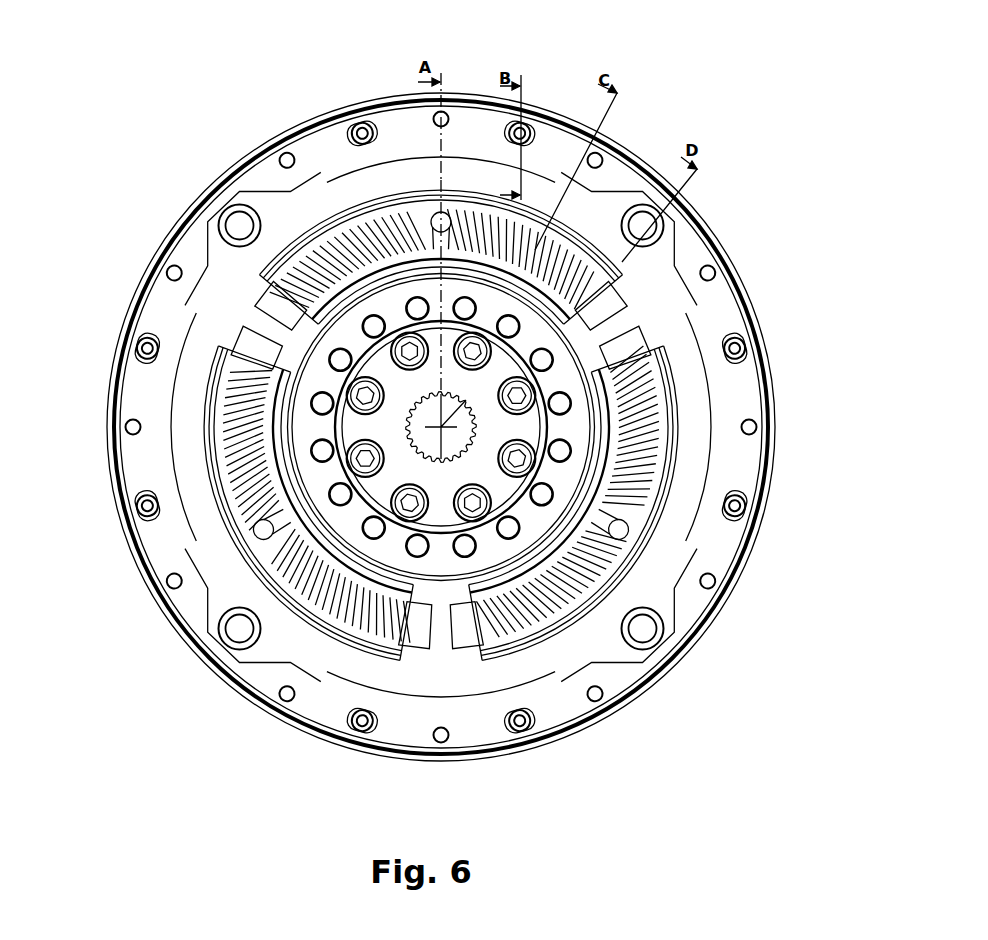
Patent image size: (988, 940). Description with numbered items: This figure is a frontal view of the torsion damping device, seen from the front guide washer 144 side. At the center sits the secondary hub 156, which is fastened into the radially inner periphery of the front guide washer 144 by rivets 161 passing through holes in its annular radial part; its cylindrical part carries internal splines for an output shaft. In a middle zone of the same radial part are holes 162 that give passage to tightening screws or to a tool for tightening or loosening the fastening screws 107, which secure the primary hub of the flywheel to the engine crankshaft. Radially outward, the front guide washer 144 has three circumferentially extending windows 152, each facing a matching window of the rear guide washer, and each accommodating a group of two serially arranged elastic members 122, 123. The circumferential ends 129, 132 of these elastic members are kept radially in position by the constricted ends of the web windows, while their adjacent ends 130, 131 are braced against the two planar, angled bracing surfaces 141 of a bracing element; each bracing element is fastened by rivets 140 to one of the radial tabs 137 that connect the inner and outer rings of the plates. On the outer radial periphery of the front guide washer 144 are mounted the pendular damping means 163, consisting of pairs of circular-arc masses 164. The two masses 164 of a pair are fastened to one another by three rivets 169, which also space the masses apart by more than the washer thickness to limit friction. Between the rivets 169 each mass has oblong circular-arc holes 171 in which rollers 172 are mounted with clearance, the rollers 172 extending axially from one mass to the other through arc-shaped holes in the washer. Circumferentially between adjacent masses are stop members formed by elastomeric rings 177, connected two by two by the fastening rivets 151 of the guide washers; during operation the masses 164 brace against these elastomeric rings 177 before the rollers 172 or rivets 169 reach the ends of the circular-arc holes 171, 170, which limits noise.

The fastening screws 107 is at (352, 340).
The elastic member 122 is at (357, 610).
The elastic member 123 is at (250, 478).
The end of elastic member 129 is at (387, 610).
The end of elastic member 130 is at (285, 540).
The end of elastic member 131 is at (265, 525).
The end of elastic member 132 is at (217, 350).
The radial tab 137 is at (630, 525).
The rivet 140 is at (602, 552).
The bracing surface 141 is at (390, 222).
The front guide washer 144 is at (672, 342).
The fastening rivet 151 is at (262, 203).
The window 152 is at (215, 460).
The secondary hub 156 is at (502, 427).
The rivet 161 is at (527, 597).
The hole 162 is at (268, 280).
The pendular damping means 163 is at (760, 368).
The mass 164 is at (398, 157).
The rivet 169 is at (443, 110).
The circular-arc hole 170 is at (327, 182).
The oblong hole 171 is at (524, 130).
The roller 172 is at (552, 140).
The elastomeric ring 177 is at (242, 222).